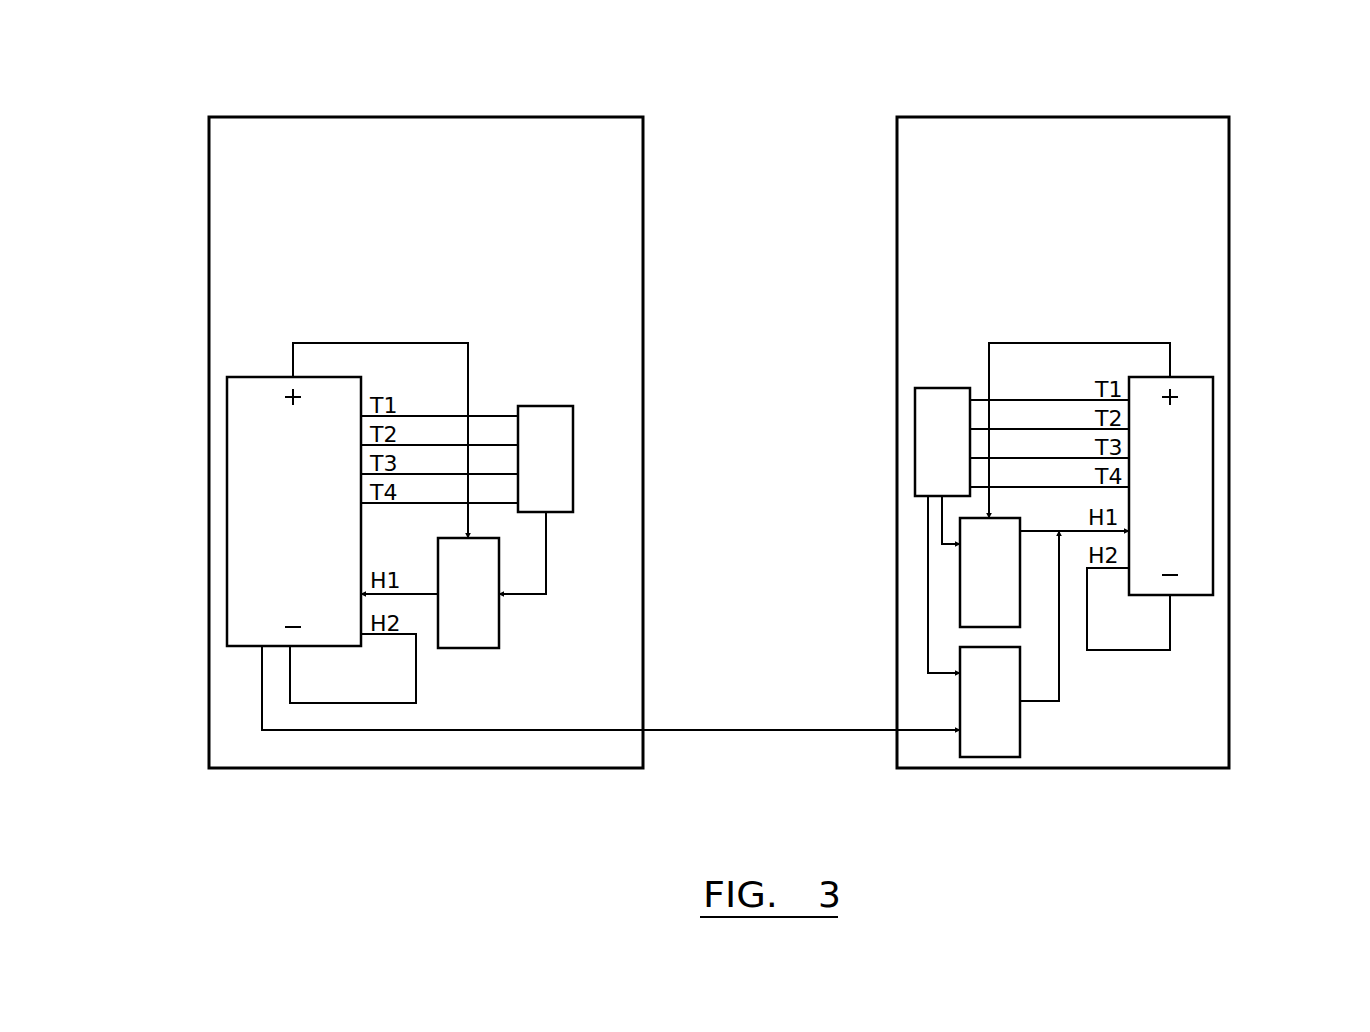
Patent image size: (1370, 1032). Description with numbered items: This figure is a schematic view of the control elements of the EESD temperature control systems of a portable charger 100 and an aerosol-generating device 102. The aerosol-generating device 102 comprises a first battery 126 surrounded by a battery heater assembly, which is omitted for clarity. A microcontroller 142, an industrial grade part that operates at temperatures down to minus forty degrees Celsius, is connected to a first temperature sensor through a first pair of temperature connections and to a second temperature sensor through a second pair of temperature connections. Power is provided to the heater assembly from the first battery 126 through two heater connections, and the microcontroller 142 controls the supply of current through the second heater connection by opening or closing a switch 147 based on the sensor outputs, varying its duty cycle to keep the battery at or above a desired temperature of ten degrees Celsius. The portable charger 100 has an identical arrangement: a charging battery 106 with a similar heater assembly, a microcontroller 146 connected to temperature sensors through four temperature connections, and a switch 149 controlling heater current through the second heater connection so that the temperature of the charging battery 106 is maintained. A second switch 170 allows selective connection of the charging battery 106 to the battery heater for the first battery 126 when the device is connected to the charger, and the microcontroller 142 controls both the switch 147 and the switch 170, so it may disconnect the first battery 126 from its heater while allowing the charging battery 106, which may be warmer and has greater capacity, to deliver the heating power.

The portable charger 100 is at (428, 117).
The aerosol-generating device 102 is at (1064, 117).
The charging battery 106 is at (227, 511).
The first battery 126 is at (1213, 484).
The microcontroller 142 is at (915, 447).
The microcontroller 146 is at (573, 456).
The switch 147 is at (960, 573).
The switch 149 is at (499, 625).
The second switch 170 is at (990, 757).